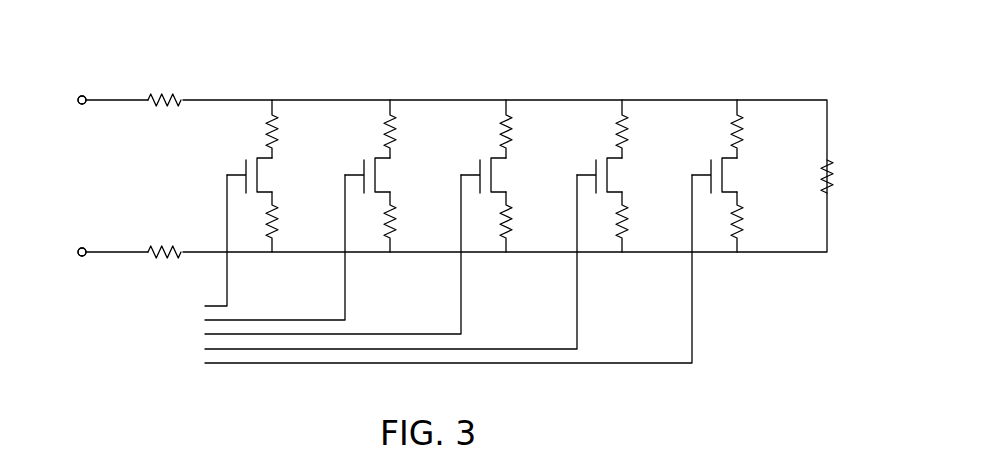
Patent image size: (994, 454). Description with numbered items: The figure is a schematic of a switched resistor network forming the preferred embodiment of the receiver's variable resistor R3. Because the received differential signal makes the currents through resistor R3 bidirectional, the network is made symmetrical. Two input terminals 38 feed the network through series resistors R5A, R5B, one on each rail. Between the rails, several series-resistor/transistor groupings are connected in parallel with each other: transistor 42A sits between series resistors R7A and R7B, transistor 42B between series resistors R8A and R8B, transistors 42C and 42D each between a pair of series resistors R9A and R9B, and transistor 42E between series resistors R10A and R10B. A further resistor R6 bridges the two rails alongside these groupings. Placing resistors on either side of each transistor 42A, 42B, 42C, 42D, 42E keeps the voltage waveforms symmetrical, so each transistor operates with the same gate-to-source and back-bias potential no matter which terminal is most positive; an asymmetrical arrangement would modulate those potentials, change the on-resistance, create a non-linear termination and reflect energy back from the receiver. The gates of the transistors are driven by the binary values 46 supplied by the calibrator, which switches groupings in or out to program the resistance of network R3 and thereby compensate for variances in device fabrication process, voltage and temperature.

The input terminals 38 is at (80, 96).
The series resistor R5A is at (161, 79).
The series resistor R5B is at (166, 232).
The resistor R6 is at (844, 179).
The variable resistor R3 is at (742, 58).
The series resistor R7A is at (293, 129).
The series resistor R7B is at (293, 222).
The series resistor R8A is at (411, 129).
The series resistor R8B is at (411, 222).
The series resistor R9A is at (585, 129).
The series resistor R9B is at (585, 222).
The series resistor R10A is at (764, 129).
The series resistor R10B is at (764, 222).
The transistor 42A is at (267, 175).
The transistor 42B is at (385, 175).
The transistor 42C is at (501, 175).
The transistor 42D is at (617, 175).
The transistor 42E is at (732, 175).
The binary values 46 is at (192, 307).